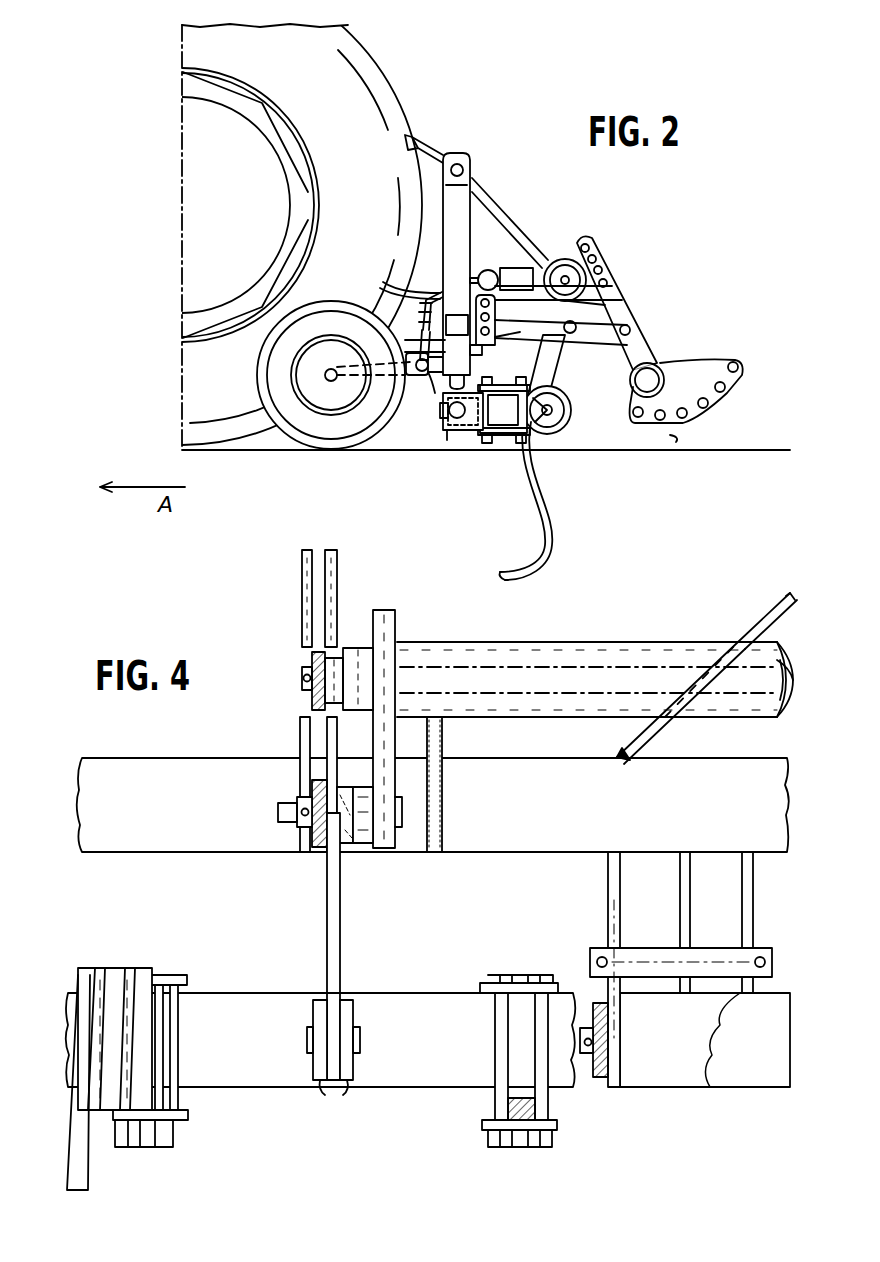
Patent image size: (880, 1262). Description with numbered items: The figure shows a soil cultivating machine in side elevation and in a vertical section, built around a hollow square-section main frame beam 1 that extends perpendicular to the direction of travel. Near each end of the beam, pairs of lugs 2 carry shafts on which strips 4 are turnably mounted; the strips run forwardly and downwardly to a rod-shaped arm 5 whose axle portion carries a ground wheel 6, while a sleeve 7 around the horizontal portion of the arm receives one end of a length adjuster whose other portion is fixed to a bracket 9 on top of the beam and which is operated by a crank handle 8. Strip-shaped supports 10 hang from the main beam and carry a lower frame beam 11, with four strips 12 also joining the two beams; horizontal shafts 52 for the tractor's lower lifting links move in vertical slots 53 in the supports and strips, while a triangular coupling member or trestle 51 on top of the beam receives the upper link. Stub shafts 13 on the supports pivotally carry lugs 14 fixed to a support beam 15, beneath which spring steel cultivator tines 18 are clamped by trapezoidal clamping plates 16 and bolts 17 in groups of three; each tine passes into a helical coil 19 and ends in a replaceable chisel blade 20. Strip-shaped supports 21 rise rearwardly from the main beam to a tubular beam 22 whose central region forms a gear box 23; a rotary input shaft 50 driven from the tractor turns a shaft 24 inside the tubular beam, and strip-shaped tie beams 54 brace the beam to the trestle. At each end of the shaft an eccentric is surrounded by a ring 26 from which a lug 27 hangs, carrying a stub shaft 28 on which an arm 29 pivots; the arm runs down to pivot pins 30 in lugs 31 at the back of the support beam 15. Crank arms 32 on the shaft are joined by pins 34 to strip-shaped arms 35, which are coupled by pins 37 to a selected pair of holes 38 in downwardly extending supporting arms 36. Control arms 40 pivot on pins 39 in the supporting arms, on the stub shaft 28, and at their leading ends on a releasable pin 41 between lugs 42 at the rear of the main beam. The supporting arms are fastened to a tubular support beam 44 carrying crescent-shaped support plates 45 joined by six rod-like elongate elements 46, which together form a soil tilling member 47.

In FIG. 2, the main frame beam 1 is at (420, 340).
In FIG. 4, the main frame beam 1 is at (130, 852).
In FIG. 2, the lugs 2 is at (472, 348).
In FIG. 2, the strips 4 is at (438, 404).
In FIG. 2, the rod-shaped arm 5 is at (362, 362).
In FIG. 2, the ground wheels 6 is at (262, 380).
In FIG. 2, the sleeve 7 is at (405, 374).
In FIG. 2, the crank handles 8 is at (444, 294).
In FIG. 2, the bracket 9 is at (383, 285).
In FIG. 2, the strip-shaped supports 10 is at (438, 412).
In FIG. 4, the strip-shaped supports 10 is at (605, 868).
In FIG. 2, the frame beam 11 is at (432, 440).
In FIG. 4, the frame beam 11 is at (668, 1085).
In FIG. 4, the strips 12 is at (745, 870).
In FIG. 2, the stub shafts 13 is at (453, 432).
In FIG. 4, the stub shafts 13 is at (600, 1080).
In FIG. 2, the lugs 14 is at (468, 432).
In FIG. 4, the lugs 14 is at (612, 1085).
In FIG. 2, the support beam 15 is at (510, 438).
In FIG. 4, the support beam 15 is at (262, 993).
In FIG. 2, the clamping plates 16 is at (516, 443).
In FIG. 4, the clamping plates 16 is at (188, 985).
In FIG. 4, the bolts 17 is at (520, 1147).
In FIG. 2, the cultivator tines 18 is at (560, 497).
In FIG. 4, the cultivator tines 18 is at (93, 1178).
In FIG. 2, the helical coil 19 is at (572, 418).
In FIG. 4, the helical coil 19 is at (110, 968).
In FIG. 2, the chisel blade 20 is at (502, 570).
In FIG. 4, the strip-shaped supports 21 is at (442, 750).
In FIG. 4, the tubular beam 22 is at (596, 642).
In FIG. 2, the gear box 23 is at (615, 294).
In FIG. 4, the shaft 24 is at (790, 725).
In FIG. 2, the ring 26 is at (584, 243).
In FIG. 4, the ring 26 is at (398, 612).
In FIG. 2, the lug 27 is at (610, 305).
In FIG. 4, the lug 27 is at (396, 762).
In FIG. 2, the stub shaft 28 is at (576, 333).
In FIG. 4, the stub shaft 28 is at (406, 812).
In FIG. 2, the arm 29 is at (556, 386).
In FIG. 4, the arm 29 is at (342, 920).
In FIG. 4, the pivot pins 30 is at (360, 1048).
In FIG. 2, the lugs 31 is at (567, 408).
In FIG. 4, the lugs 31 is at (339, 1107).
In FIG. 2, the crank arms 32 is at (563, 259).
In FIG. 4, the crank arms 32 is at (353, 648).
In FIG. 2, the pins 34 is at (556, 262).
In FIG. 4, the pins 34 is at (302, 688).
In FIG. 2, the strip-shaped arms 35 is at (610, 270).
In FIG. 4, the strip-shaped arms 35 is at (312, 662).
In FIG. 2, the supporting arms 36 is at (650, 346).
In FIG. 4, the supporting arms 36 is at (330, 548).
In FIG. 2, the pins 37 is at (612, 282).
In FIG. 2, the holes 38 is at (600, 258).
In FIG. 2, the pivot pins 39 is at (636, 326).
In FIG. 2, the control arms 40 is at (525, 338).
In FIG. 4, the control arms 40 is at (322, 847).
In FIG. 2, the releasable pin 41 is at (495, 349).
In FIG. 4, the releasable pin 41 is at (278, 812).
In FIG. 2, the lugs 42 is at (497, 302).
In FIG. 4, the lugs 42 is at (325, 737).
In FIG. 2, the tubular support beam 44 is at (665, 368).
In FIG. 2, the support plates 45 is at (723, 405).
In FIG. 2, the elongate elements 46 is at (705, 415).
In FIG. 2, the soil tilling member 47 is at (668, 440).
In FIG. 2, the rotary input shaft 50 is at (518, 268).
In FIG. 2, the coupling member or trestle 51 is at (473, 195).
In FIG. 4, the coupling member or trestle 51 is at (776, 612).
In FIG. 4, the horizontal shafts 52 is at (590, 955).
In FIG. 4, the vertical slots 53 is at (610, 922).
In FIG. 2, the tie beams 54 is at (515, 222).